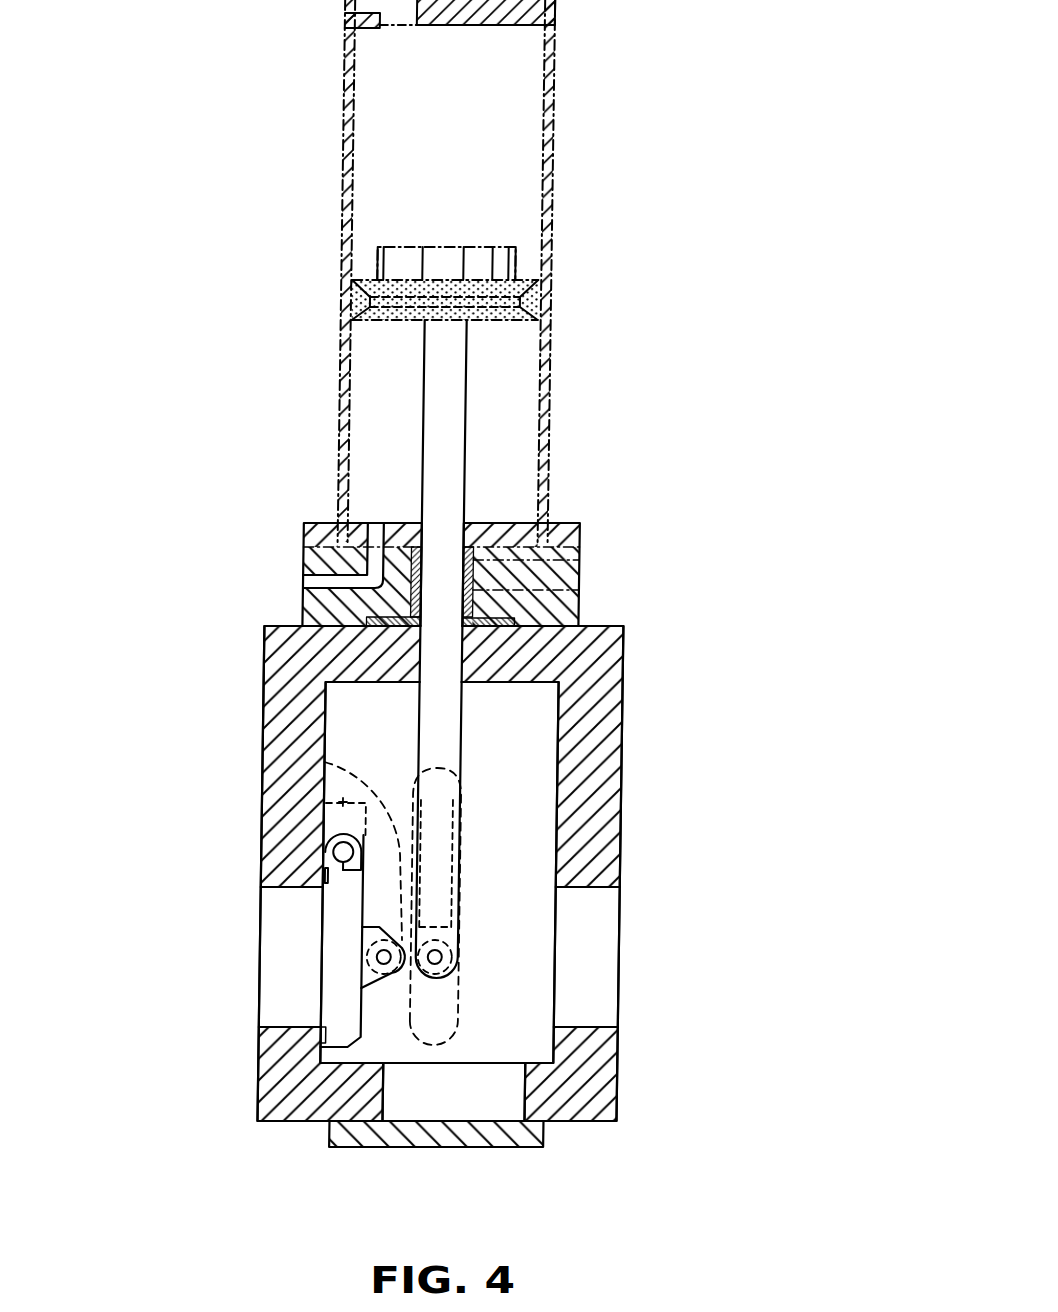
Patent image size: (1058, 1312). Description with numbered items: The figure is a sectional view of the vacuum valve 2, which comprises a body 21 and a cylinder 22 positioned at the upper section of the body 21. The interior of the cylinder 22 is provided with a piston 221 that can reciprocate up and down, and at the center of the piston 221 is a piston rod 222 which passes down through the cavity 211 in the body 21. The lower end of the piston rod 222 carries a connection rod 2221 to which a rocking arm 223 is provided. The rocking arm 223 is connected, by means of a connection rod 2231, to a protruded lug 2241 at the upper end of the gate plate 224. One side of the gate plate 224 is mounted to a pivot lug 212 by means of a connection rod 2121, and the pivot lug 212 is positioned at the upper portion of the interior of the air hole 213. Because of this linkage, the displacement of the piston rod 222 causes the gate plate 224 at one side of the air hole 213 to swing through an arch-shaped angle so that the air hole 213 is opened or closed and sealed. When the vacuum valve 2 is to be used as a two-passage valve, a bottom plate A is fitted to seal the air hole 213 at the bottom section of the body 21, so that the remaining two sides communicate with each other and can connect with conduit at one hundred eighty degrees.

The vacuum valve 2 is at (640, 678).
The body 21 is at (598, 778).
The cavity 211 is at (524, 818).
The pivot lug 212 is at (340, 800).
The connection rod 2121 is at (343, 852).
The air hole 213 is at (282, 935).
The cylinder 22 is at (551, 410).
The piston 221 is at (548, 312).
The piston rod 222 is at (445, 480).
The connection rod 2221 is at (437, 962).
The rocking arm 223 is at (323, 762).
The connection rod 2231 is at (387, 959).
The gate plate 224 is at (337, 921).
The protruded lug 2241 is at (392, 960).
The bottom plate A is at (478, 1147).